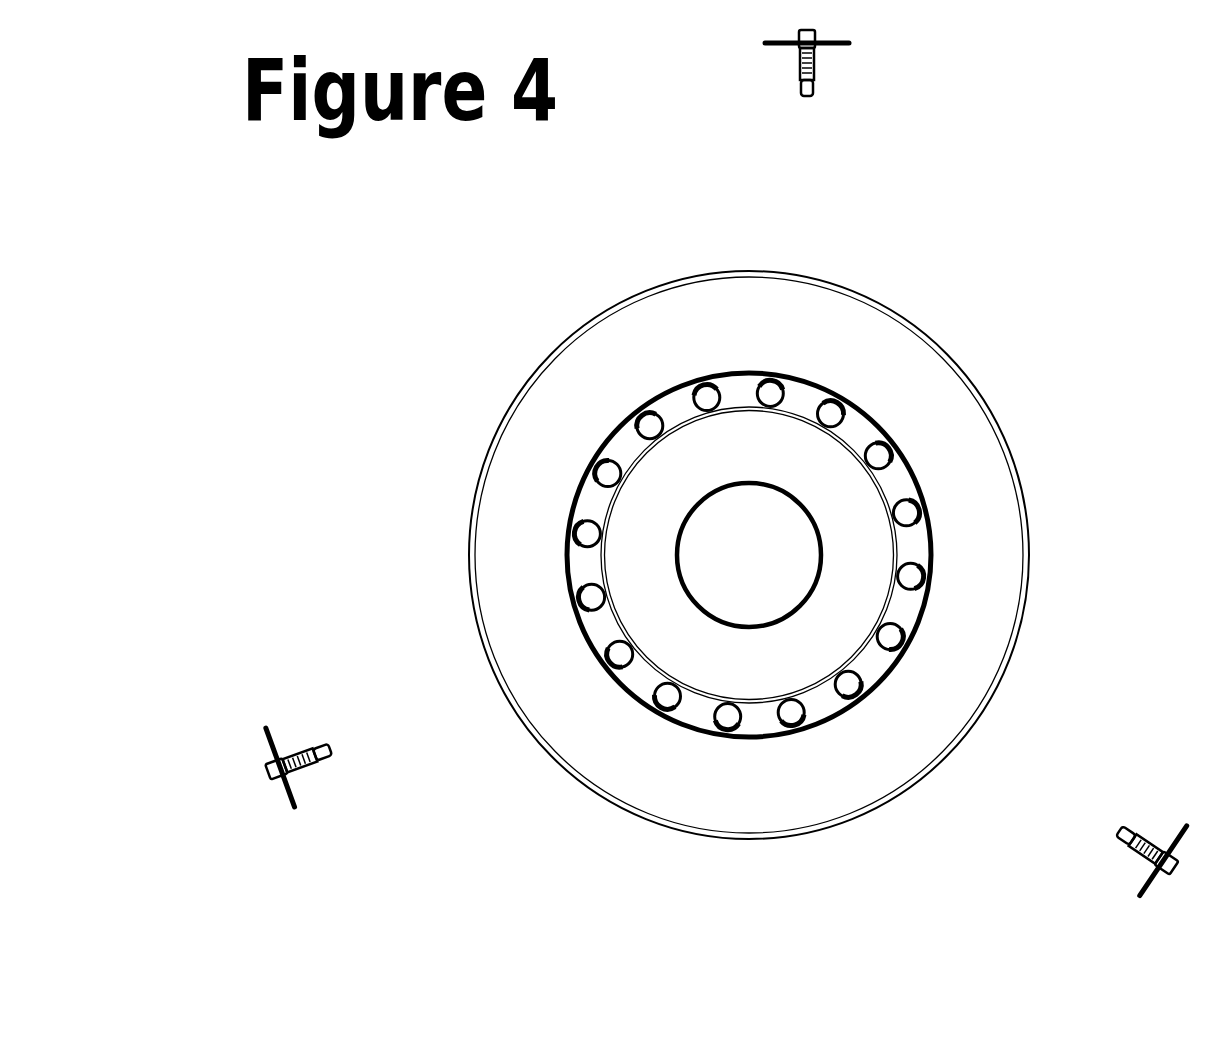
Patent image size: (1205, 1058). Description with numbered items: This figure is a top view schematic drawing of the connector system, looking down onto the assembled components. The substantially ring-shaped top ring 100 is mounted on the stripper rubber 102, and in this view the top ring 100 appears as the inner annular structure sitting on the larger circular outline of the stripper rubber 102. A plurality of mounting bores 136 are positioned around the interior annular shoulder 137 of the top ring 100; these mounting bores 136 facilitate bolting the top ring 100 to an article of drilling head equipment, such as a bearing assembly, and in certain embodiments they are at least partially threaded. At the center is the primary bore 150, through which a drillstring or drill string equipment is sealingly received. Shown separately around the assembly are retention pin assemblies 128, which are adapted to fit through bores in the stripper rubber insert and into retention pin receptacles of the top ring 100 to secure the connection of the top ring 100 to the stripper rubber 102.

The top ring 100 is at (840, 318).
The stripper rubber 102 is at (795, 450).
The retention pin assembly 128 is at (813, 87).
The mounting bores 136 is at (912, 638).
The interior annular shoulder 137 is at (588, 563).
The primary bore 150 is at (768, 556).